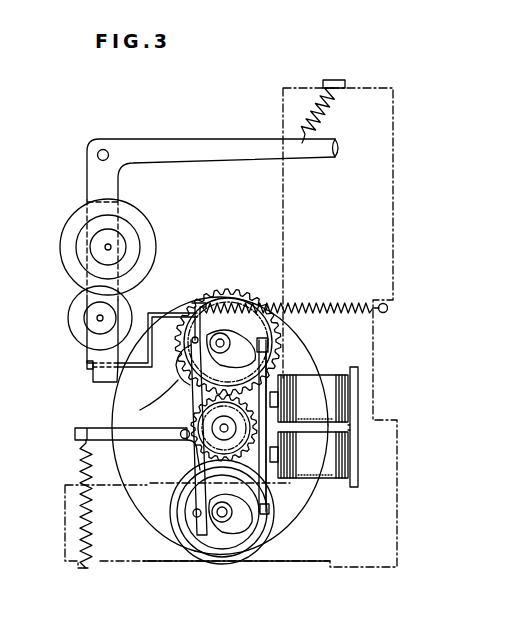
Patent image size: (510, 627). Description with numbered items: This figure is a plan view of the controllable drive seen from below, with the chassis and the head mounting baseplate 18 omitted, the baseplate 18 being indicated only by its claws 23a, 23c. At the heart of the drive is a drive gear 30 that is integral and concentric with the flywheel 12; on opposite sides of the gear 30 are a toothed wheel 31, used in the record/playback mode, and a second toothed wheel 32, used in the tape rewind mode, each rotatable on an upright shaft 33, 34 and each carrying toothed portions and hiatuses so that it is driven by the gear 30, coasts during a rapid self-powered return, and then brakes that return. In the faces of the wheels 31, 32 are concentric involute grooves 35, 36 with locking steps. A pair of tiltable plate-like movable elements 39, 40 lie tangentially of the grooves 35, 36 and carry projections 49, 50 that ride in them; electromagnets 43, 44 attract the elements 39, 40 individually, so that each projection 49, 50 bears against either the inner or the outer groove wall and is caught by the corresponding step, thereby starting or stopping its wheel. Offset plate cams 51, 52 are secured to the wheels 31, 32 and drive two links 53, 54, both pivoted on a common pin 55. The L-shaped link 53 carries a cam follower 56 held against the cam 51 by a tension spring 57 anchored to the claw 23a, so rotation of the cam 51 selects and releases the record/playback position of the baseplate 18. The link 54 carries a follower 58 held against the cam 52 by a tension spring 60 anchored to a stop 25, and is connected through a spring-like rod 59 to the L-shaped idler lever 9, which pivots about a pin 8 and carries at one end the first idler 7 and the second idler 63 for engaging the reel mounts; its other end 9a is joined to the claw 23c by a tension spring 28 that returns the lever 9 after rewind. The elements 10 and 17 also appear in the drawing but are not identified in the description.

The first idler 7 is at (78, 249).
The pin 8 is at (103, 149).
The L-shaped lever 9 is at (170, 150).
The other end of lever 9a is at (340, 152).
The base plate 10 is at (221, 431).
The flywheel 12 is at (147, 497).
The pulley flange 17 is at (72, 216).
The baseplate 18 is at (395, 107).
The claw 23a is at (96, 568).
The claw 23c is at (345, 78).
The stop 25 is at (388, 312).
The tension spring 28 is at (304, 108).
The drive gear 30 is at (211, 418).
The toothed wheel 31 is at (270, 548).
The toothed wheel 32 is at (246, 294).
The upright shaft 33 is at (226, 518).
The upright shaft 34 is at (220, 333).
The groove 35 is at (240, 552).
The groove 36 is at (186, 325).
The movable element 39 is at (286, 452).
The movable element 40 is at (286, 400).
The electromagnet 43 is at (358, 455).
The electromagnet 44 is at (358, 397).
The projection 49 is at (270, 510).
The projection 50 is at (268, 348).
The plate cam 51 is at (262, 528).
The plate cam 52 is at (268, 345).
The link 53 is at (84, 428).
The link 54 is at (147, 402).
The pin 55 is at (180, 438).
The cam follower 56 is at (192, 520).
The tension spring 57 is at (80, 458).
The cam follower 58 is at (178, 348).
The rod 59 is at (150, 322).
The tension spring 60 is at (343, 305).
The second idler 63 is at (70, 315).